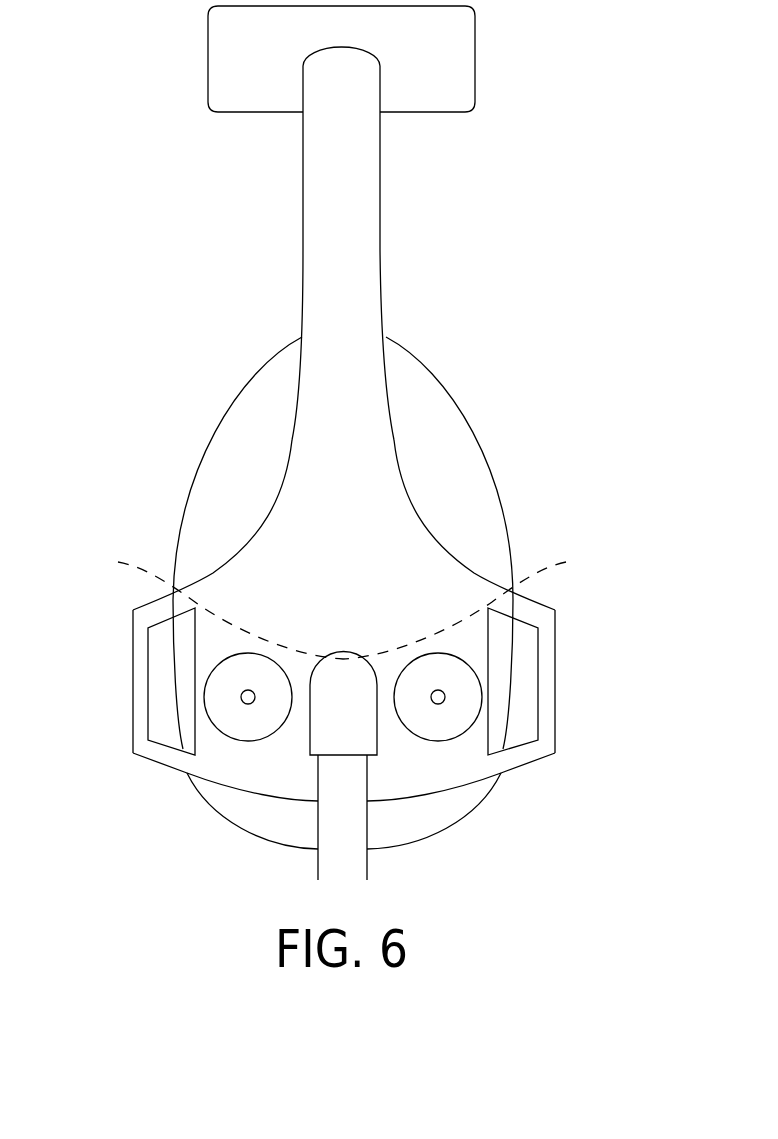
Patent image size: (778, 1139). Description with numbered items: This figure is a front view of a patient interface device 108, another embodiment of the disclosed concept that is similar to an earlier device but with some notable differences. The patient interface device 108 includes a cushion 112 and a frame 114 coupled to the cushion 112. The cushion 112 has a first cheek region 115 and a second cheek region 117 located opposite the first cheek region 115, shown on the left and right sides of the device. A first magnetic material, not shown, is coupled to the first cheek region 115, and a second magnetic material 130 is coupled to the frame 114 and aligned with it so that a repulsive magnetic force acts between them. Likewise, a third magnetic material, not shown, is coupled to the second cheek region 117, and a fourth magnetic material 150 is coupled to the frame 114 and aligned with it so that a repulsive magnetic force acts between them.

The patient interface device 108 is at (586, 176).
The cushion 112 is at (443, 417).
The frame 114 is at (363, 305).
The first cheek region 115 is at (207, 603).
The second cheek region 117 is at (475, 603).
The second magnetic material 130 is at (227, 682).
The fourth magnetic material 150 is at (456, 682).